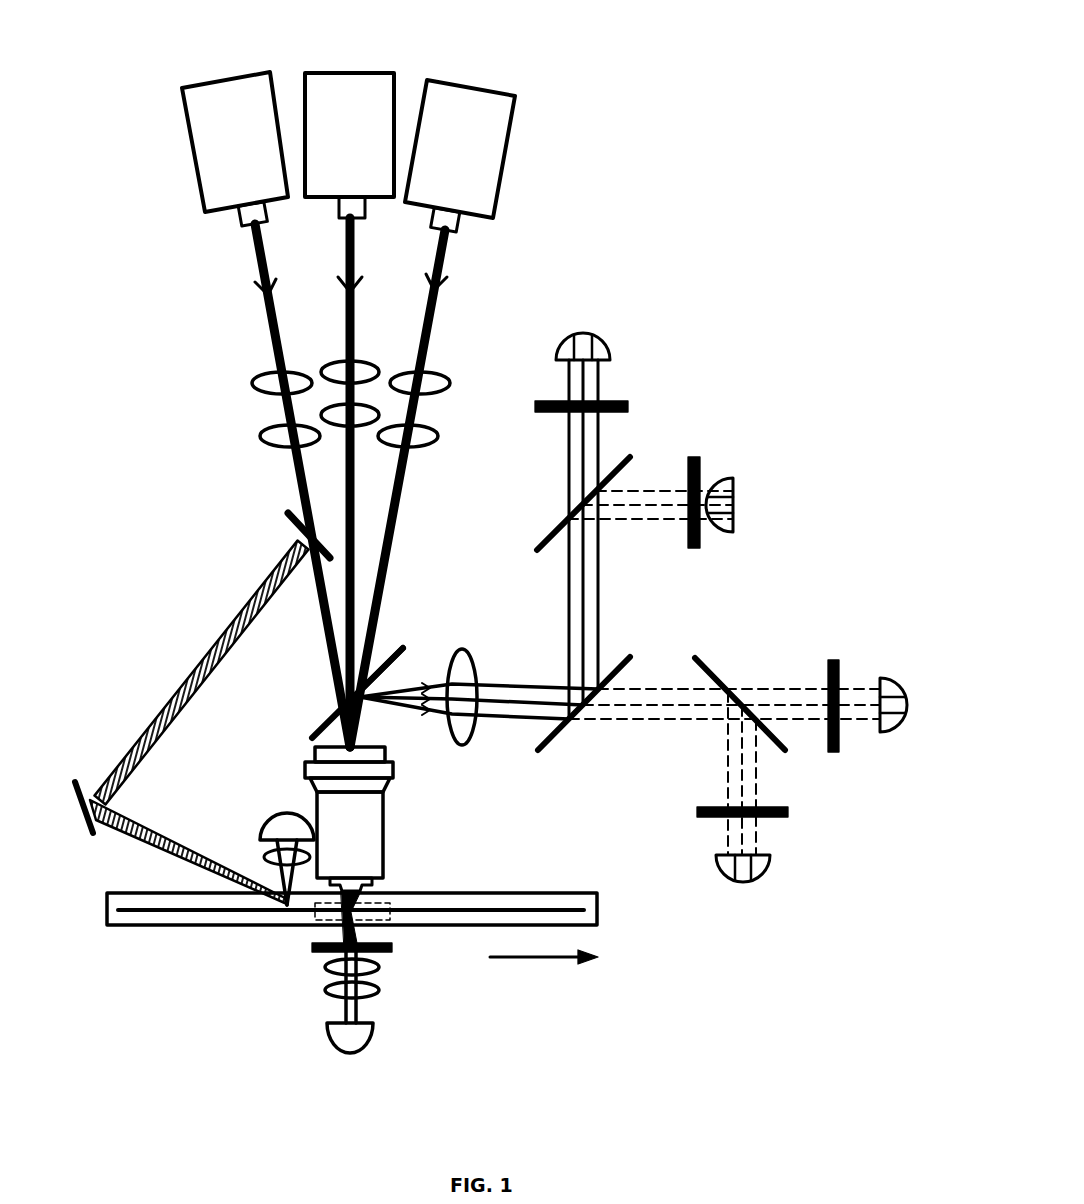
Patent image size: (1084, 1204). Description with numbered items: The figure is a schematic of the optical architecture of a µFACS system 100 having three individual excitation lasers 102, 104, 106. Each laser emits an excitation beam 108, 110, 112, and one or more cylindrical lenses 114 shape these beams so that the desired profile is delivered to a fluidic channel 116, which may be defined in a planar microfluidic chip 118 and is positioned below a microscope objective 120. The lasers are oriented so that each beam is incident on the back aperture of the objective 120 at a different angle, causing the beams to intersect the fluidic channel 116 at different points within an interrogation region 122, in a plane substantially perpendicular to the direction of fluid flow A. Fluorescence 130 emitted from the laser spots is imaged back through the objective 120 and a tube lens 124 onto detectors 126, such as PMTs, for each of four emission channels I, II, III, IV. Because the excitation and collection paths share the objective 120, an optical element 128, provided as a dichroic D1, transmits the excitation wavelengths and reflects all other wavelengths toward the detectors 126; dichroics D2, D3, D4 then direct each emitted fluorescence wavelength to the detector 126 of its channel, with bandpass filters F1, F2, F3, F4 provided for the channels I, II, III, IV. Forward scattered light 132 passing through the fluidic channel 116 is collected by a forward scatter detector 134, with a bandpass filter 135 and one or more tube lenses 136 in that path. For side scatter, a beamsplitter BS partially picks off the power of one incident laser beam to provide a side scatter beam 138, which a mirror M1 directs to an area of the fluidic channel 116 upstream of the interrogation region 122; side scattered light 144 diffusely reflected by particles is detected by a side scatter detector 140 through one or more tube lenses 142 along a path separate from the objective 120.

The µFACS system 100 is at (742, 170).
The excitation laser 102 is at (470, 86).
The excitation laser 104 is at (352, 73).
The excitation laser 106 is at (230, 77).
The excitation beam 108 is at (450, 262).
The excitation beam 110 is at (347, 262).
The excitation beam 112 is at (256, 262).
The cylindrical lenses 114 is at (228, 386).
The fluidic channel 116 is at (150, 909).
The planar microfluidic chip 118 is at (152, 926).
The objective 120 is at (378, 822).
The interrogation region 122 is at (305, 930).
The tube lens 124 is at (472, 652).
The detectors 126 is at (600, 334).
The optical element 128 is at (409, 614).
The fluorescence 130 is at (412, 731).
The forward scattered light 132 is at (358, 934).
The forward scatter detector 134 is at (373, 1040).
The bandpass filter 135 is at (323, 953).
The tube lenses 136 is at (388, 985).
The side scatter beam 138 is at (248, 597).
The side scatter detector 140 is at (291, 812).
The tube lenses 142 is at (263, 848).
The side scattered light 144 is at (273, 883).
The beamsplitter BS is at (290, 525).
The mirror M1 is at (76, 788).
The dichroic D1 is at (340, 712).
The dichroic D2 is at (560, 528).
The dichroic D3 is at (548, 753).
The dichroic D4 is at (705, 665).
The bandpass filter F1 is at (610, 405).
The bandpass filter F2 is at (700, 540).
The bandpass filter F3 is at (840, 755).
The bandpass filter F4 is at (790, 818).
The emission channel I is at (534, 350).
The emission channel II is at (735, 440).
The emission channel III is at (882, 644).
The emission channel IV is at (686, 859).
The direction of fluid flow A is at (544, 970).